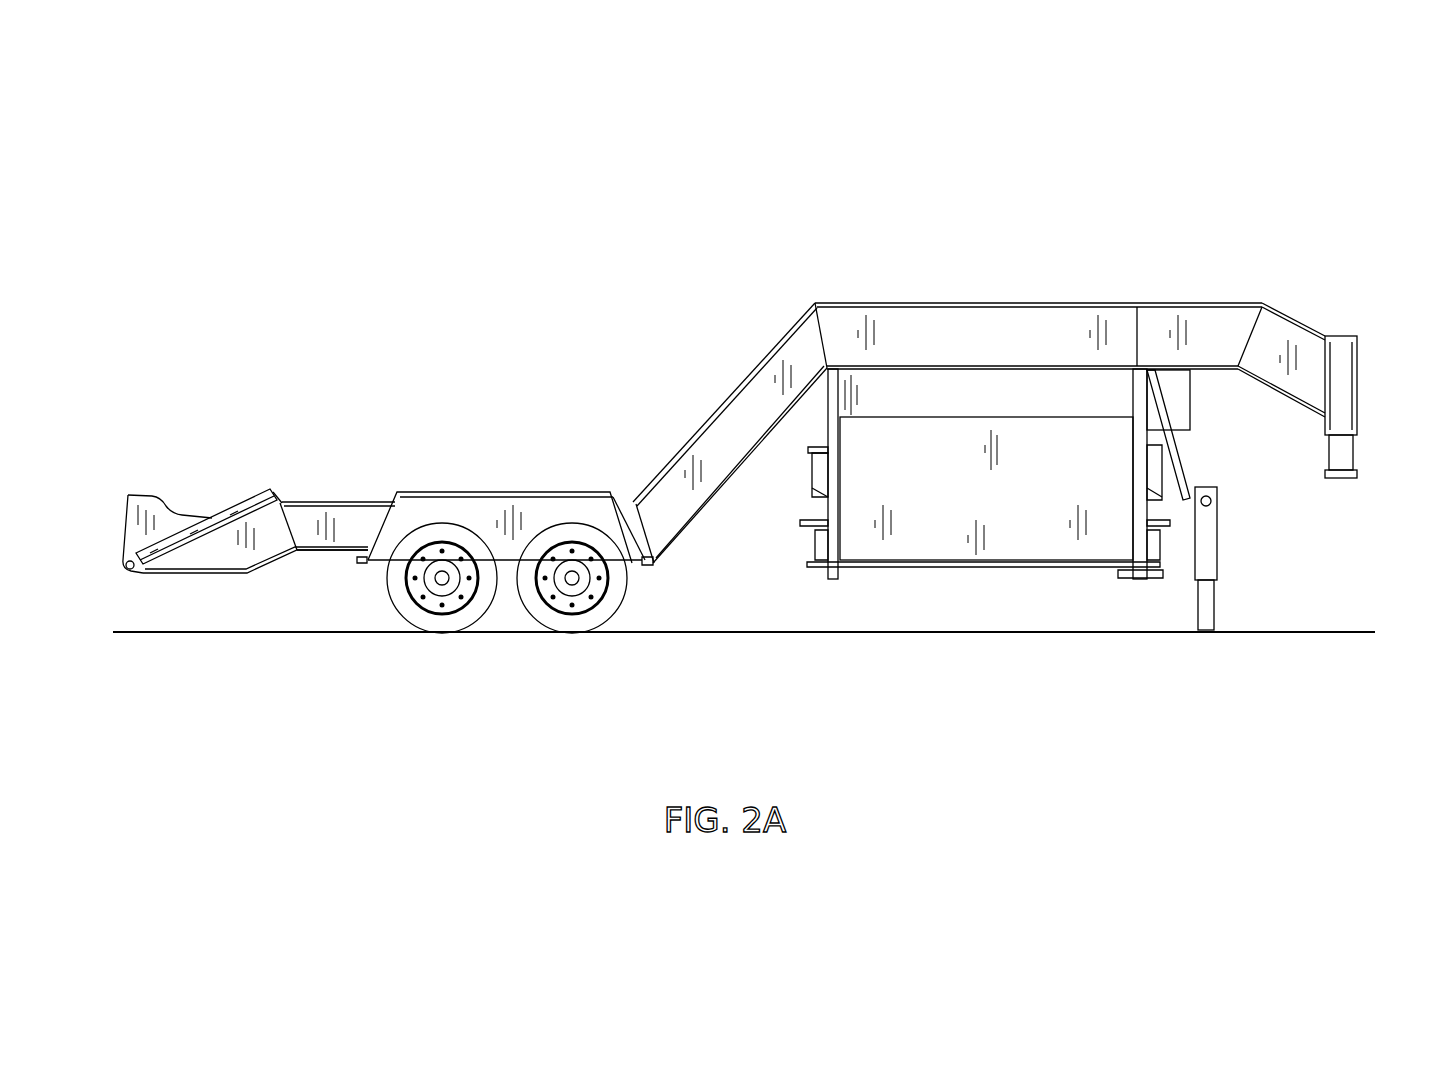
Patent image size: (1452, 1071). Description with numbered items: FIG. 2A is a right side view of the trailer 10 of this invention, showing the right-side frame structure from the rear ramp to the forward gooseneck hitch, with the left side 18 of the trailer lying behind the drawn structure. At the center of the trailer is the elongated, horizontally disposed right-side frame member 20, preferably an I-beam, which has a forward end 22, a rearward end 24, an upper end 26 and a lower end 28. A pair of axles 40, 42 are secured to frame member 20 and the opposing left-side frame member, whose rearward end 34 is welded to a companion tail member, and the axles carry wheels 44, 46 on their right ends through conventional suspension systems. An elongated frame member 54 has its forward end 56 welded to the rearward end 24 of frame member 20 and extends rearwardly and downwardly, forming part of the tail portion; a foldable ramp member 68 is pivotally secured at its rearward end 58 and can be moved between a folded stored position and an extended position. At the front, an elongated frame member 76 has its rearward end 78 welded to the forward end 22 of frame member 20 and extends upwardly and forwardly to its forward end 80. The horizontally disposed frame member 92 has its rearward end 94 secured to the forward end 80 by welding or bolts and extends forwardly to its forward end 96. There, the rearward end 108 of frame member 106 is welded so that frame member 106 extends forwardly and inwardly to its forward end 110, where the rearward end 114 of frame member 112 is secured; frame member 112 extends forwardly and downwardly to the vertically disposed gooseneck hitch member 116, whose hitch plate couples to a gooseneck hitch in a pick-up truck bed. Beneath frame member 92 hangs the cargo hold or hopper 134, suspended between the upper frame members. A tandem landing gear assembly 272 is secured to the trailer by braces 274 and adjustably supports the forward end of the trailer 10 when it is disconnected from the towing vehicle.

The trailer 10 is at (692, 322).
The left side 18 is at (830, 665).
The right-side frame member 20 is at (366, 488).
The forward end of frame member 20 22 is at (628, 490).
The rearward end of frame member 20 24 is at (322, 552).
The upper end of frame member 20 26 is at (330, 520).
The lower end of frame member 20 28 is at (308, 530).
The rearward end of frame member 30 34 is at (285, 520).
The axle 40 is at (572, 582).
The axle 42 is at (442, 582).
The wheel 44 is at (622, 590).
The wheel 46 is at (470, 598).
The frame member 54 is at (220, 560).
The forward end of frame member 54 56 is at (208, 500).
The rearward end of frame member 54 58 is at (128, 575).
The foldable ramp member 68 is at (205, 490).
The frame member 76 is at (703, 415).
The rearward end of frame member 76 78 is at (652, 525).
The forward end of frame member 76 80 is at (812, 325).
The frame member 92 is at (1020, 300).
The rearward end of frame member 92 94 is at (1132, 322).
The forward end of frame member 92 96 is at (830, 325).
The frame member 106 is at (1208, 303).
The rearward end of frame member 106 108 is at (1143, 322).
The forward end of frame member 106 110 is at (1247, 322).
The frame member 112 is at (1298, 325).
The rearward end of frame member 112 114 is at (1253, 355).
The gooseneck hitch member 116 is at (1362, 400).
The cargo hold or hopper 134 is at (1015, 545).
The tandem landing gear assembly 272 is at (1232, 540).
The braces 274 is at (1180, 452).